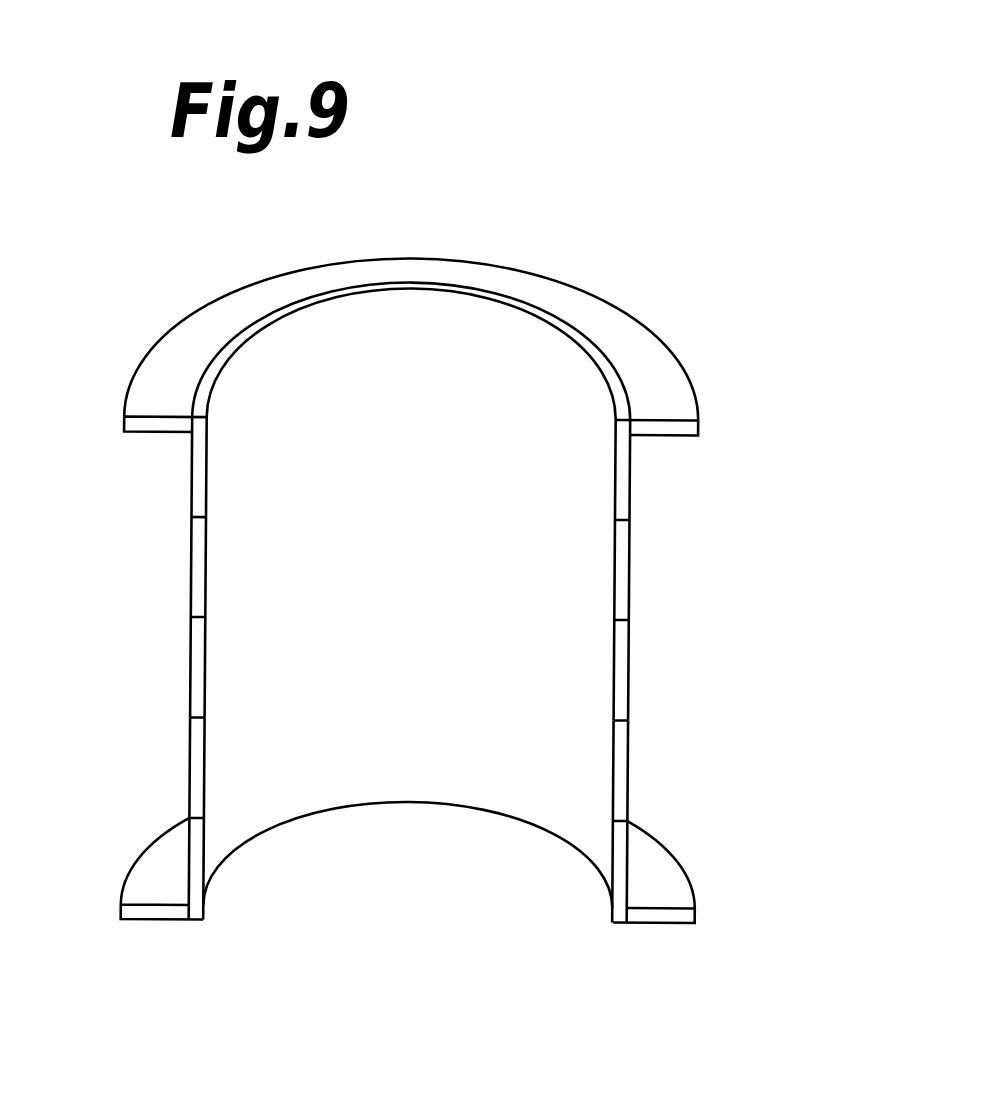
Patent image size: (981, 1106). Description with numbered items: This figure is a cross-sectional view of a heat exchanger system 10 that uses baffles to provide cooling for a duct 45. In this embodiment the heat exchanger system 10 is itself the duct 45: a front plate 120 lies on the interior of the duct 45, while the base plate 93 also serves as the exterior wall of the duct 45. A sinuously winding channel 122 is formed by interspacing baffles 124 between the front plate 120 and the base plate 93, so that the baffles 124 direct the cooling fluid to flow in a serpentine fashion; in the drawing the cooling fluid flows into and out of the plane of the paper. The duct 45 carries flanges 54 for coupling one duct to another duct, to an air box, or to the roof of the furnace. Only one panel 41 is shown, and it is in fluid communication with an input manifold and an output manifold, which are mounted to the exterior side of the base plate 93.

The heat exchanger system 10 is at (632, 244).
The duct 45 is at (123, 318).
The flanges 54 is at (698, 418).
The channel 122 is at (630, 475).
The baffles 124 is at (630, 620).
The panel 41 is at (422, 603).
The base plate 93 is at (629, 768).
The front plate 120 is at (203, 848).